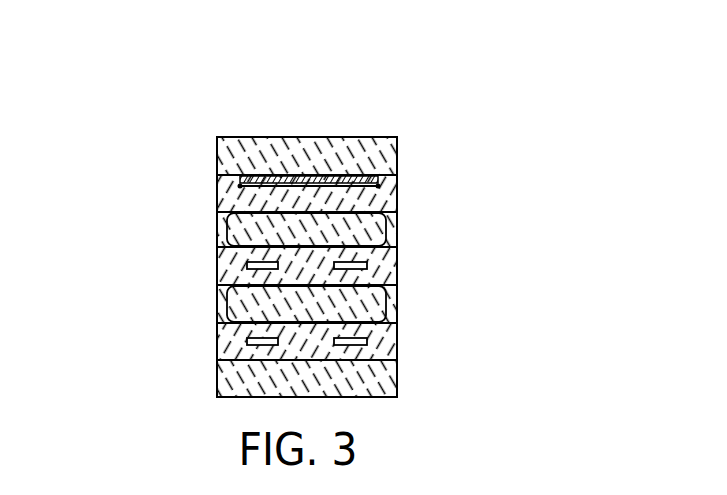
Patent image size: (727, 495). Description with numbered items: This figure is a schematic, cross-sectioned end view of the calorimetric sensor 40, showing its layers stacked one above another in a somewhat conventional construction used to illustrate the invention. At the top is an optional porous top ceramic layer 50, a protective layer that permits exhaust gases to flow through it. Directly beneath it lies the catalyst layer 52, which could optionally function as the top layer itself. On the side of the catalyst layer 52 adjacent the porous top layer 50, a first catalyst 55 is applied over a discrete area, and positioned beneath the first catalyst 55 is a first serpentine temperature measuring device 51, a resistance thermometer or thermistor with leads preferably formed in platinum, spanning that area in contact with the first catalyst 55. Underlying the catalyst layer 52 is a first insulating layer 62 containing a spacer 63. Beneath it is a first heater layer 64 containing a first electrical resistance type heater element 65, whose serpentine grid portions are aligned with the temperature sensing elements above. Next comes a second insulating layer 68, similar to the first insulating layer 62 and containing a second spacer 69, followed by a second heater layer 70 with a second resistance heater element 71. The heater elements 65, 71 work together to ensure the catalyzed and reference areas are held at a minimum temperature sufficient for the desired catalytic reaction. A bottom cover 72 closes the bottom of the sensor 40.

The sensor 40 is at (362, 113).
The porous top ceramic layer 50 is at (398, 152).
The first serpentine temperature measuring device 51 is at (338, 184).
The catalyst layer 52 is at (216, 193).
The first catalyst 55 is at (260, 172).
The first insulating layer 62 is at (398, 225).
The spacer 63 is at (227, 232).
The first heater layer 64 is at (398, 267).
The first electrical resistance type heater element 65 is at (256, 265).
The second insulating layer 68 is at (398, 304).
The second spacer 69 is at (224, 295).
The second heater layer 70 is at (398, 345).
The second resistance heater element 71 is at (255, 342).
The bottom cover 72 is at (218, 380).